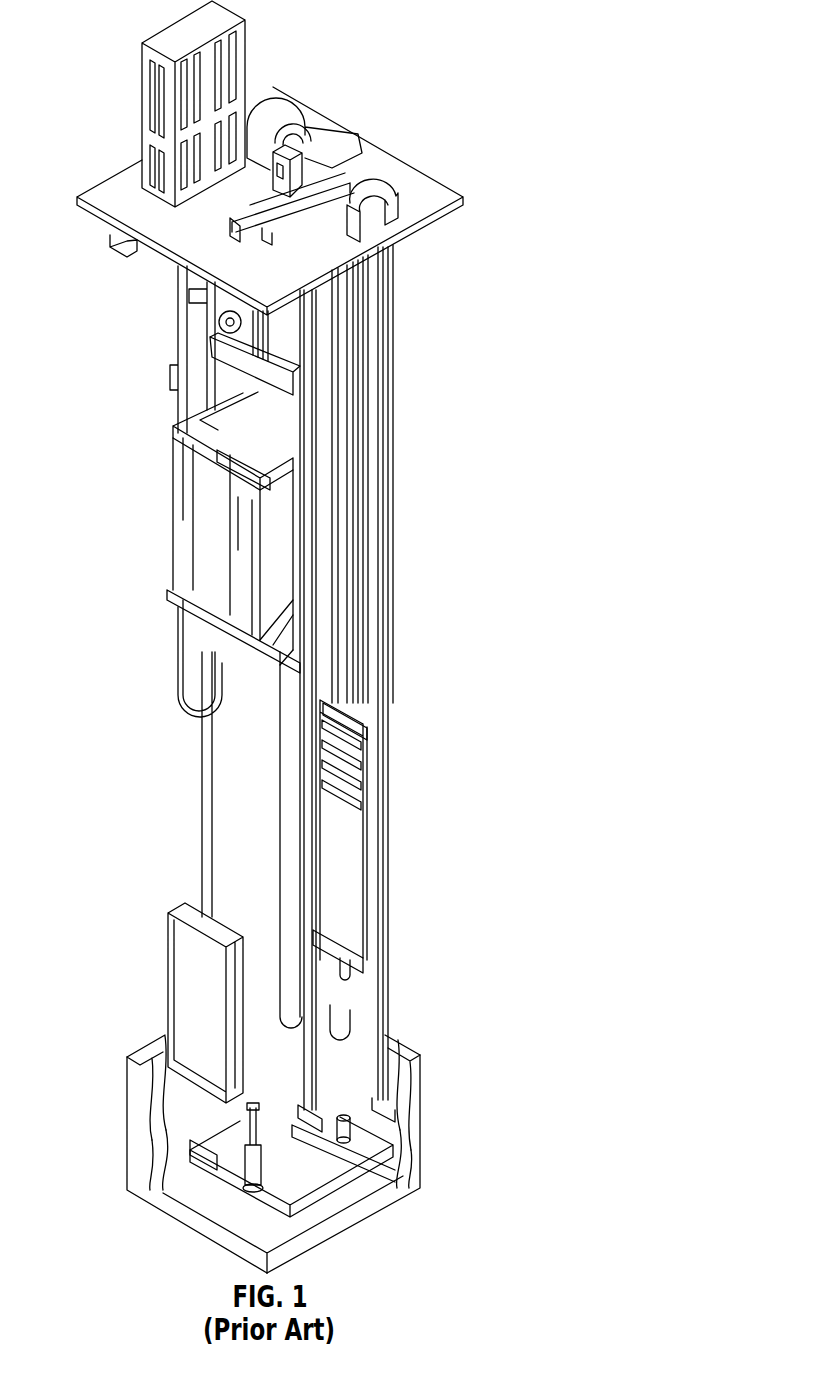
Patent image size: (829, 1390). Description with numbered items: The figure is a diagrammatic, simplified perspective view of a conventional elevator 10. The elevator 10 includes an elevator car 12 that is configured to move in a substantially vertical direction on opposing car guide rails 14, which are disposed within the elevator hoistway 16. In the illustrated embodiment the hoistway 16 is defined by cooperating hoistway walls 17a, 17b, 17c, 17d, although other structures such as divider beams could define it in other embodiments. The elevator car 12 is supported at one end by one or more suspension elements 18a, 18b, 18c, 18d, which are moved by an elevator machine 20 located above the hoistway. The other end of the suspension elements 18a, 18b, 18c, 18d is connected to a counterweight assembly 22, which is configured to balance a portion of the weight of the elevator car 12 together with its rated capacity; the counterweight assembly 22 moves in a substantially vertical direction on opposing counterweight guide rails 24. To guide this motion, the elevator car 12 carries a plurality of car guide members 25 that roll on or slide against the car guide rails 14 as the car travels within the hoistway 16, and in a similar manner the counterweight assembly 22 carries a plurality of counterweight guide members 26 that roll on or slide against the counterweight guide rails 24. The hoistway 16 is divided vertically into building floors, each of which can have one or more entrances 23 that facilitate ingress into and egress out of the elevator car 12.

The elevator 10 is at (114, 36).
The elevator car 12 is at (170, 497).
The car guide rails 14 is at (200, 790).
The elevator hoistway 16 is at (212, 1193).
The hoistway wall 17a is at (138, 1170).
The hoistway wall 17b is at (412, 1153).
The hoistway wall 17c is at (413, 1043).
The hoistway wall 17d is at (138, 1047).
The suspension element 18a is at (363, 353).
The suspension element 18b is at (353, 375).
The suspension element 18c is at (370, 407).
The suspension element 18d is at (393, 276).
The elevator machine 20 is at (273, 98).
The counterweight assembly 22 is at (347, 863).
The entrance 23 is at (168, 967).
The counterweight guide rails 24 is at (387, 975).
The car guide members 25 is at (213, 327).
The counterweight guide members 26 is at (353, 697).